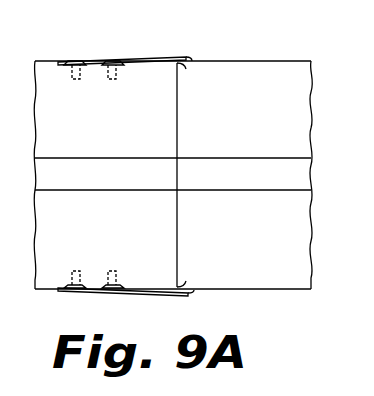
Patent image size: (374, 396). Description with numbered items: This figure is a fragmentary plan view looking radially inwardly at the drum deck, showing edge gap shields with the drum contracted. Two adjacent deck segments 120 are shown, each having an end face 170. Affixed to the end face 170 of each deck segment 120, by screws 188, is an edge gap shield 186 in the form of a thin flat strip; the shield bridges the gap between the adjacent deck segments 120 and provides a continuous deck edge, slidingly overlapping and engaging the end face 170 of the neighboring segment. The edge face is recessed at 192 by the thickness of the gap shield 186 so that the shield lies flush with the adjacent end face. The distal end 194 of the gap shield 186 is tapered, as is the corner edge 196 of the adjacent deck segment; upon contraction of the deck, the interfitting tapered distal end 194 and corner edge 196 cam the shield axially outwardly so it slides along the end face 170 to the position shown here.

The deck segment 120 is at (35, 108).
The end face 170 is at (50, 291).
The edge gap shield 186 is at (151, 59).
The screw 188 is at (116, 72).
The recess 192 is at (66, 66).
The distal end 194 is at (191, 57).
The corner edge 196 is at (186, 69).